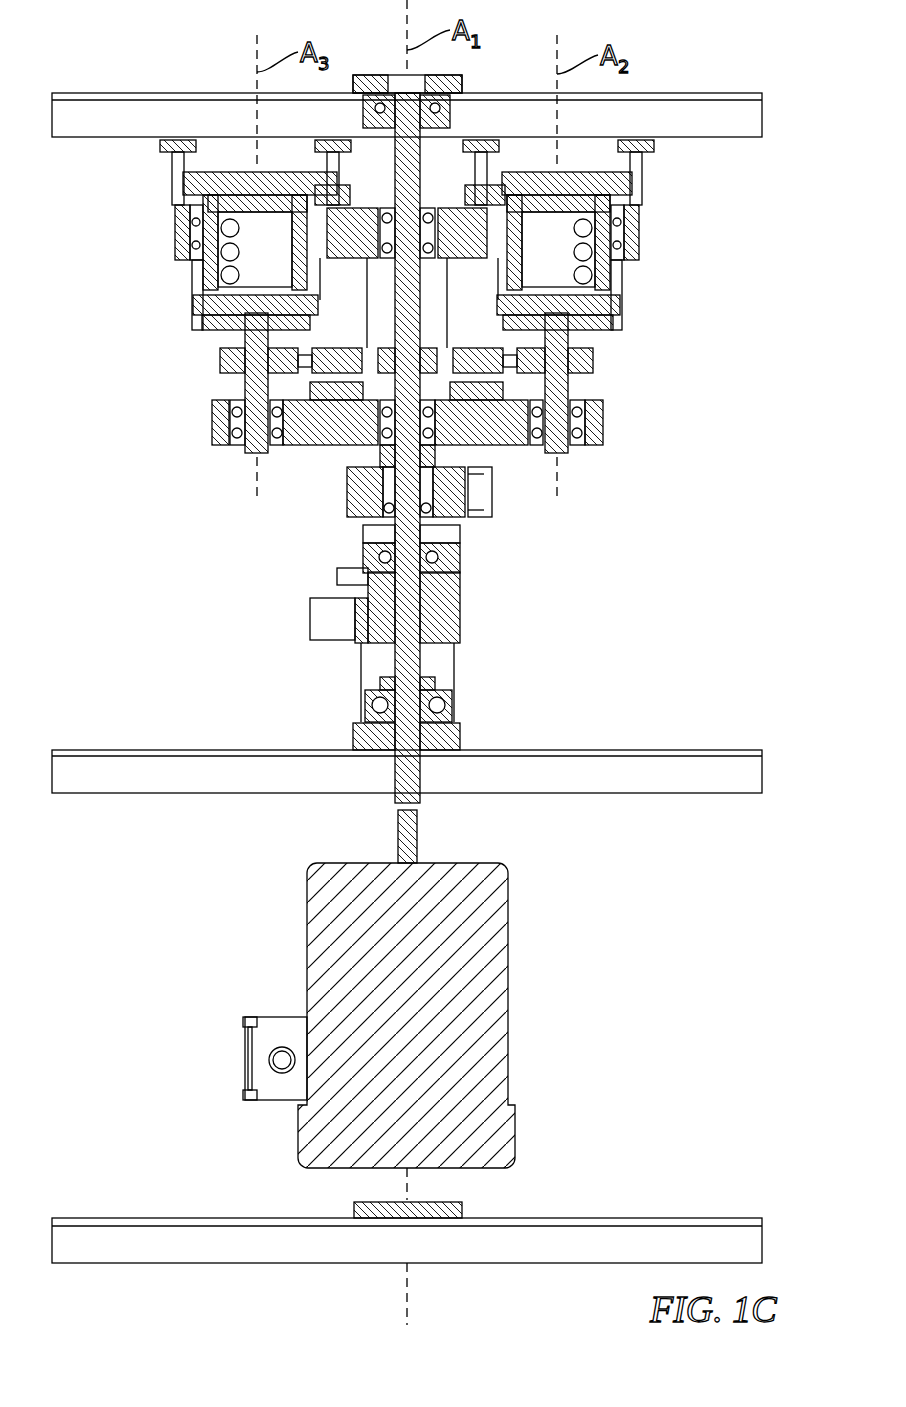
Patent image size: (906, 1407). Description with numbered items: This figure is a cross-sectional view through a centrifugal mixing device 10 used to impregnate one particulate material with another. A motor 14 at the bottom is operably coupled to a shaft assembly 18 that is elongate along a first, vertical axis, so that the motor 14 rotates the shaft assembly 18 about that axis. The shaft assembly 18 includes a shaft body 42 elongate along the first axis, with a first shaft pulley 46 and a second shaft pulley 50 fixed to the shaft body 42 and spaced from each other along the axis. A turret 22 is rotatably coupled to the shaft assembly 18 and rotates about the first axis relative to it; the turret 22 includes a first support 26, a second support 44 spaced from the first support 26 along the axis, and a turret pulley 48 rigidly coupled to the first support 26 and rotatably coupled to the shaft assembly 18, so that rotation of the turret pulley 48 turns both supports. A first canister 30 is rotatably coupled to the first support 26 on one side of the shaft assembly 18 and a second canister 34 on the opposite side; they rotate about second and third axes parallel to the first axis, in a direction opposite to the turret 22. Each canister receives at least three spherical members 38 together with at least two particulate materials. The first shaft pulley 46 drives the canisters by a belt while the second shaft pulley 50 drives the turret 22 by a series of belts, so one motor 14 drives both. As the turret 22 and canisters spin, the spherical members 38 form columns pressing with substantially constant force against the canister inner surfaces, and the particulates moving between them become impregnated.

The centrifugal mixing device 10 is at (108, 42).
The motor 14 is at (490, 1008).
The shaft assembly 18 is at (392, 657).
The turret 22 is at (180, 298).
The first support 26 is at (592, 420).
The first canister 30 is at (622, 288).
The second canister 34 is at (195, 285).
The spherical members 38 is at (230, 282).
The shaft body 42 is at (413, 570).
The second support 44 is at (640, 220).
The first shaft pulley 46 is at (433, 378).
The turret pulley 48 is at (345, 502).
The second shaft pulley 50 is at (445, 622).